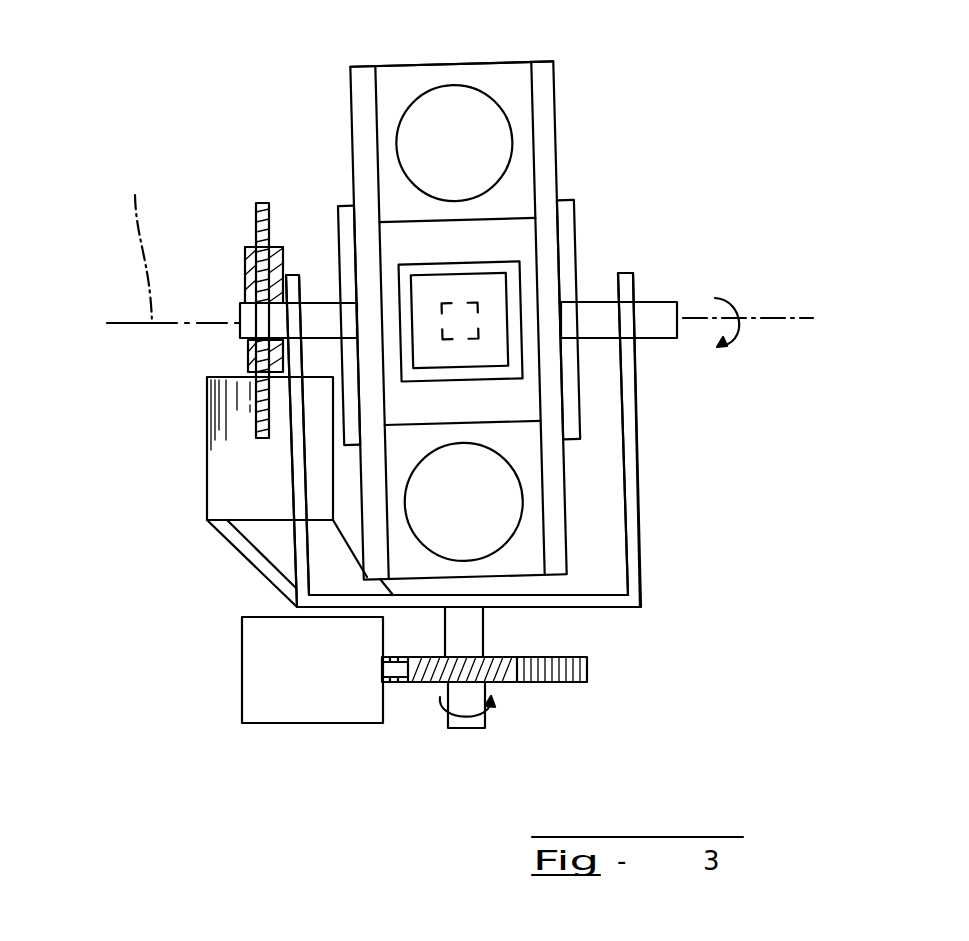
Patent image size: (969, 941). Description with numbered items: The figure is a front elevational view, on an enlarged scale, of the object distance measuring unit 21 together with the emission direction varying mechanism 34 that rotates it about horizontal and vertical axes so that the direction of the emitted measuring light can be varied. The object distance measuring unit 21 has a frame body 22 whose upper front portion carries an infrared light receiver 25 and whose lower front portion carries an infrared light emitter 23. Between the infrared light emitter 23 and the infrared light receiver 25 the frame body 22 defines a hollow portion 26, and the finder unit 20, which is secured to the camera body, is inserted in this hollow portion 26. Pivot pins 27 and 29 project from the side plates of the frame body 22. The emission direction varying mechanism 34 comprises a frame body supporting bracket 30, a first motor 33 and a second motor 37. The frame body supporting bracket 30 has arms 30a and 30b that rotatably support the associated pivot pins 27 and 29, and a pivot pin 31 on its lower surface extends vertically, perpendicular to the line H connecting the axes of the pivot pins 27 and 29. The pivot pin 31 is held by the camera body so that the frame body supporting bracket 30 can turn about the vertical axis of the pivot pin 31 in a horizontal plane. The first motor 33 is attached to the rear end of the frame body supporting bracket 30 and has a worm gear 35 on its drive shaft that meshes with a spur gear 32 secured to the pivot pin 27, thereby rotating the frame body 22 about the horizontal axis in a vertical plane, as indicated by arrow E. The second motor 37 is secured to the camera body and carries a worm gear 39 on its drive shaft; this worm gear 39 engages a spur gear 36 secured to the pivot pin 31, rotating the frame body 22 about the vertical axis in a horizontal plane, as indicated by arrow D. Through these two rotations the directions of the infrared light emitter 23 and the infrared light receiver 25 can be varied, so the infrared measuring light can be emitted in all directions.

The finder unit 20 is at (525, 264).
The object distance measuring unit 21 is at (560, 86).
The frame body 22 is at (460, 63).
The infrared light emitter 23 is at (510, 521).
The infrared light receiver 25 is at (500, 150).
The hollow portion 26 is at (530, 405).
The pivot pin 27 is at (323, 308).
The pivot pin 29 is at (655, 305).
The frame body supporting bracket 30 is at (644, 563).
The arm 30a is at (293, 548).
The arm 30b is at (642, 478).
The pivot pin 31 is at (475, 642).
The spur gear 32 is at (258, 203).
The first motor 33 is at (207, 490).
The emission direction varying mechanism 34 is at (201, 627).
The worm gear 35 is at (245, 262).
The spur gear 36 is at (585, 683).
The second motor 37 is at (330, 710).
The worm gear 39 is at (497, 683).
The line connecting the axes of the pivot pins H is at (173, 243).
The arrow E is at (720, 294).
The arrow D is at (440, 702).